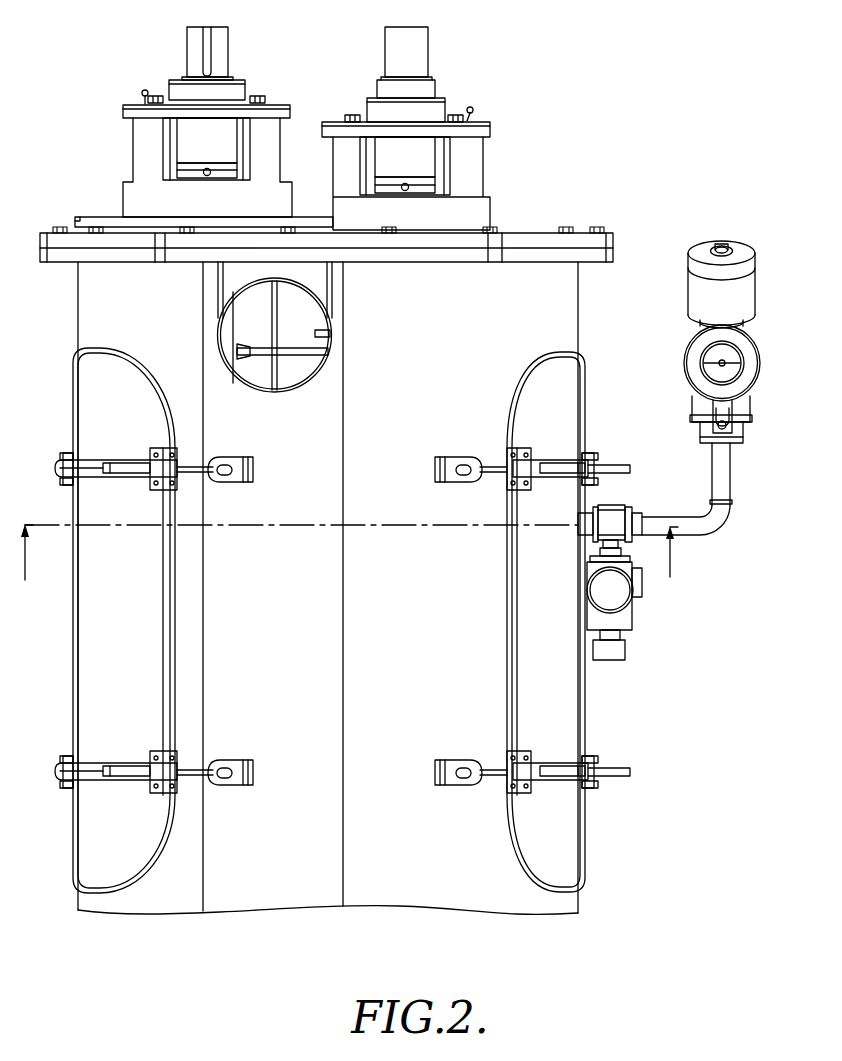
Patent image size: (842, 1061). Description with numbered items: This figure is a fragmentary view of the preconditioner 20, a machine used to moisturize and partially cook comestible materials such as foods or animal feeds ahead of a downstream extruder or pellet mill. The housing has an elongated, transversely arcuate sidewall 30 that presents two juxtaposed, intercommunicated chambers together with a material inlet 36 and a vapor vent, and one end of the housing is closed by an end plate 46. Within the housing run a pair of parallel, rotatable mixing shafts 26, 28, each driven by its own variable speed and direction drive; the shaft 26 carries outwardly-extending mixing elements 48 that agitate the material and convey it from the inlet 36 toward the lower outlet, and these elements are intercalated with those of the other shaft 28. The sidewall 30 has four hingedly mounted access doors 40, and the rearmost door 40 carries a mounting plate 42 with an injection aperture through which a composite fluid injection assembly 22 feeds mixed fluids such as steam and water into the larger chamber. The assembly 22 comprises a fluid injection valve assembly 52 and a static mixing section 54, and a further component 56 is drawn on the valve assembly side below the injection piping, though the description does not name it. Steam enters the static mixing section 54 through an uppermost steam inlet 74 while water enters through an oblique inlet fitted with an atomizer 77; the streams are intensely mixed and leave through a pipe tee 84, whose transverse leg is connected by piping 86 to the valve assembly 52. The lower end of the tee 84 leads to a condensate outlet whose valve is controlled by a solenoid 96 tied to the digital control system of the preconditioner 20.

The preconditioner 20 is at (617, 172).
The composite fluid injection assembly 22 is at (703, 368).
The mixing shaft 26 is at (192, 42).
The mixing shaft 28 is at (417, 47).
The sidewall 30 is at (492, 899).
The material inlet 36 is at (275, 361).
The access door 40 is at (88, 680).
The mounting plate 42 is at (582, 529).
The end plate 46 is at (527, 241).
The mixing elements 48 is at (286, 353).
The fluid injection valve assembly 52 is at (616, 521).
The static mixing section 54 is at (721, 391).
The drain valve 56 is at (630, 618).
The steam inlet 74 is at (733, 348).
The atomizer 77 is at (715, 427).
The pipe tee 84 is at (697, 401).
The piping 86 is at (725, 479).
The solenoid 96 is at (740, 251).